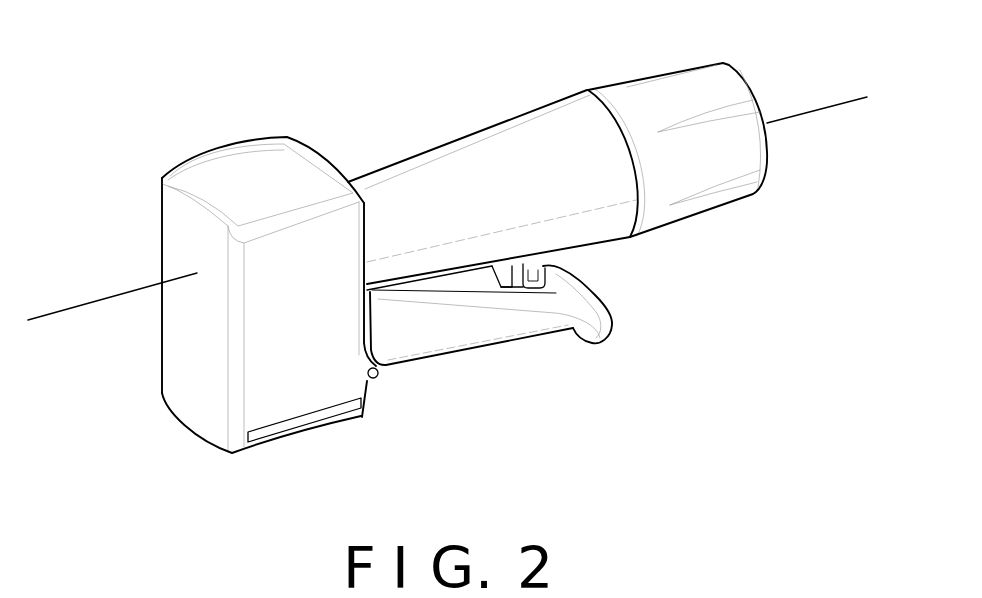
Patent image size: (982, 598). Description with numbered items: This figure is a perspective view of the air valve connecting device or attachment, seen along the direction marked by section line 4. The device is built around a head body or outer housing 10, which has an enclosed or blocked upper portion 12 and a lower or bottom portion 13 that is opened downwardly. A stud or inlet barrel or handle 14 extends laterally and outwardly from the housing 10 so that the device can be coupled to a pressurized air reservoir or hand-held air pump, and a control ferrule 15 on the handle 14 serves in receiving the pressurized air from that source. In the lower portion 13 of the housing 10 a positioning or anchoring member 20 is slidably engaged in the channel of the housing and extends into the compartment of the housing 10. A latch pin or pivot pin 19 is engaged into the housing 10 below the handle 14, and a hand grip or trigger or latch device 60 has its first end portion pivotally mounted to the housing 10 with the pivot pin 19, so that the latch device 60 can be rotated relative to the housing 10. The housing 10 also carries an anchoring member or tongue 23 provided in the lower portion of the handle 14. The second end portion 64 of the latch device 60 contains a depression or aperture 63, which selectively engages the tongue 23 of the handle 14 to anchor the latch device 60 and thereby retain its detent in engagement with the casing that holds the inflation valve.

The section line 4- 4 is at (63, 313).
The head body or outer housing 10 is at (260, 284).
The upper portion 12 is at (202, 177).
The lower or bottom portion 13 is at (187, 395).
The handle 14 is at (513, 152).
The control ferrule 15 is at (657, 100).
The pivot pin 19 is at (381, 377).
The anchoring member 20 is at (300, 427).
The anchoring member or tongue 23 is at (545, 278).
The latch device 60 is at (530, 332).
The aperture 63 is at (503, 288).
The second end portion 64 is at (600, 323).